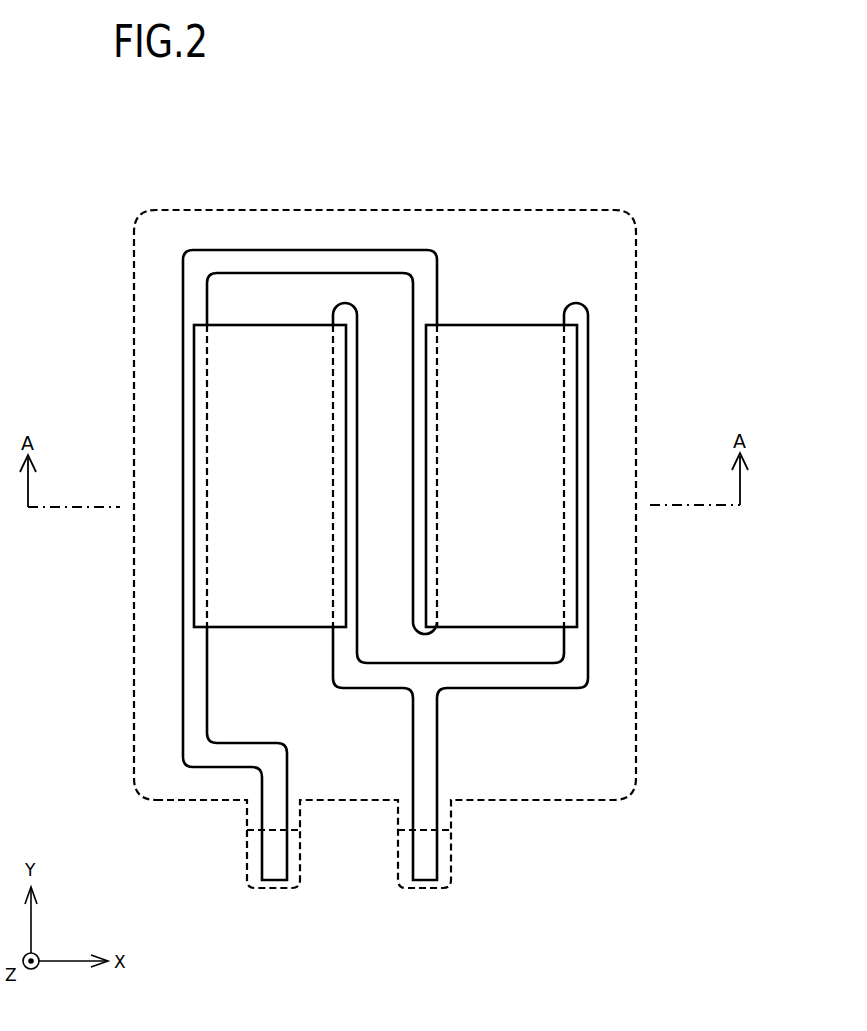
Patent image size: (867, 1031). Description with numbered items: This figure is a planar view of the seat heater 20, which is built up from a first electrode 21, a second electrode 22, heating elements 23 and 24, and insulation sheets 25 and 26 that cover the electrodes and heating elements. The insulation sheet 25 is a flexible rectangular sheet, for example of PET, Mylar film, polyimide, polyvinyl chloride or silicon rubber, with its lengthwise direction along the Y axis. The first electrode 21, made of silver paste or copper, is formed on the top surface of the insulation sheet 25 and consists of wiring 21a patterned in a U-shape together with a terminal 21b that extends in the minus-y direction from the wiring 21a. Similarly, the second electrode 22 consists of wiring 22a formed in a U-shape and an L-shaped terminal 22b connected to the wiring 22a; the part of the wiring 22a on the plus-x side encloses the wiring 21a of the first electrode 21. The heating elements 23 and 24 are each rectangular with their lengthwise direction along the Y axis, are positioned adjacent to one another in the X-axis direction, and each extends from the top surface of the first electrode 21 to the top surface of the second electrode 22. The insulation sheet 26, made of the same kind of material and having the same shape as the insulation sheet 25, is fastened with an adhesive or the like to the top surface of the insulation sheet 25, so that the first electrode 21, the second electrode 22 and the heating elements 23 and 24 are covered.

The seat heater 20 is at (573, 186).
The first electrode 21 is at (466, 591).
The wiring 21a is at (465, 689).
The terminal 21b is at (437, 744).
The second electrode 22 is at (310, 565).
The wiring 22a is at (207, 697).
The terminal 22b is at (243, 743).
The heating element 23 is at (505, 324).
The heating element 24 is at (272, 324).
The insulation sheet 25 is at (451, 882).
The insulation sheet 26 is at (590, 801).